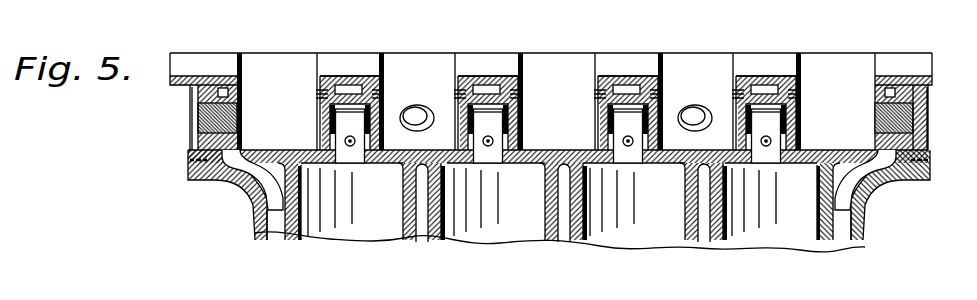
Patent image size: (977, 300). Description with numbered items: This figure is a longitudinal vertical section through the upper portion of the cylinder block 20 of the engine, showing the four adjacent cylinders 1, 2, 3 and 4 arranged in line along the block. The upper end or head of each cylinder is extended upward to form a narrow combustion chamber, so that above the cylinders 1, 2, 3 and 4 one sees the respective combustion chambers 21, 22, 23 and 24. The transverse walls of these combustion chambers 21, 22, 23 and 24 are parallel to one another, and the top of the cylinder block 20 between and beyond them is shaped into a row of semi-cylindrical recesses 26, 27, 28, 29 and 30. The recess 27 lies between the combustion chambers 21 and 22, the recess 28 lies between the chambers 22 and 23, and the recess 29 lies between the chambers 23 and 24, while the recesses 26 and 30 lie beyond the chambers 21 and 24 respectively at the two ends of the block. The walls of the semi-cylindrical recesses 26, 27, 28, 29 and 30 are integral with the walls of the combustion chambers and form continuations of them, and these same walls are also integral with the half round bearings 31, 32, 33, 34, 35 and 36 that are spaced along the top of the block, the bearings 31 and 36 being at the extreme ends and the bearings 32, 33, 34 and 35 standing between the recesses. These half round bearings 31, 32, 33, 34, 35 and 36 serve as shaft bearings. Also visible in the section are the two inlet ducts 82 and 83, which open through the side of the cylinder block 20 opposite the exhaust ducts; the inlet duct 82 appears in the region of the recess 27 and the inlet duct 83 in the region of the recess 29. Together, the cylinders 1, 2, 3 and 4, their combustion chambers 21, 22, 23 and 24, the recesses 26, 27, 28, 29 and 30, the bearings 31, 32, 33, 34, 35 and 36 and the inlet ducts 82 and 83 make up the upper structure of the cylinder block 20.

The cylinder 1 is at (377, 228).
The cylinder 2 is at (515, 235).
The cylinder 3 is at (650, 238).
The cylinder 4 is at (785, 240).
The cylinder block 20 is at (255, 213).
The combustion chamber 21 is at (357, 153).
The combustion chamber 22 is at (496, 153).
The combustion chamber 23 is at (636, 153).
The combustion chamber 24 is at (773, 153).
The semi-cylindrical recess 26 is at (256, 58).
The semi-cylindrical recess 27 is at (403, 57).
The semi-cylindrical recess 28 is at (541, 57).
The semi-cylindrical recess 29 is at (693, 57).
The semi-cylindrical recess 30 is at (830, 57).
The half round bearing 31 is at (181, 57).
The half round bearing 32 is at (339, 57).
The half round bearing 33 is at (473, 57).
The half round bearing 34 is at (612, 57).
The half round bearing 35 is at (755, 57).
The half round bearing 36 is at (900, 55).
The inlet duct 82 is at (421, 116).
The inlet duct 83 is at (700, 116).